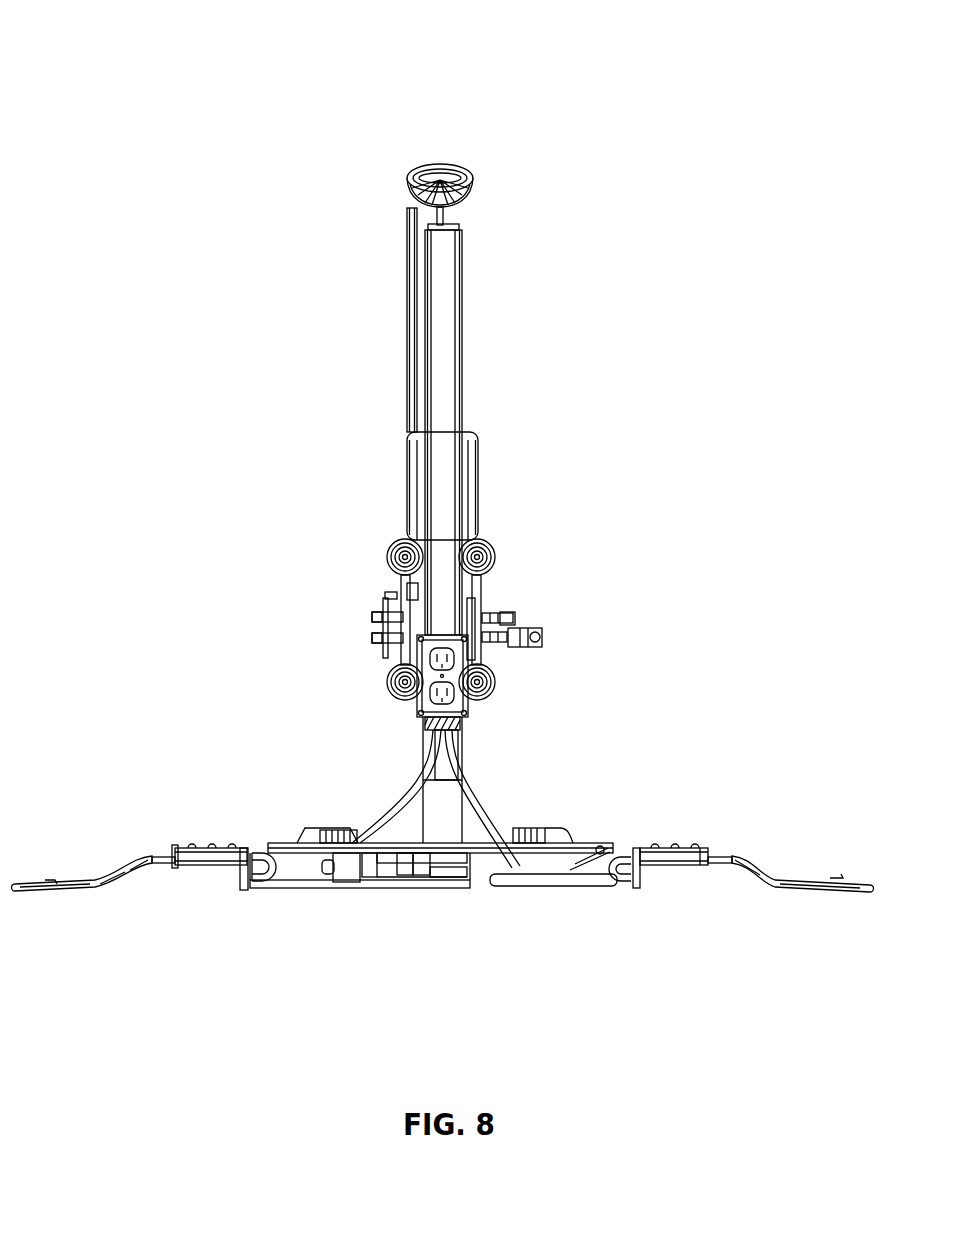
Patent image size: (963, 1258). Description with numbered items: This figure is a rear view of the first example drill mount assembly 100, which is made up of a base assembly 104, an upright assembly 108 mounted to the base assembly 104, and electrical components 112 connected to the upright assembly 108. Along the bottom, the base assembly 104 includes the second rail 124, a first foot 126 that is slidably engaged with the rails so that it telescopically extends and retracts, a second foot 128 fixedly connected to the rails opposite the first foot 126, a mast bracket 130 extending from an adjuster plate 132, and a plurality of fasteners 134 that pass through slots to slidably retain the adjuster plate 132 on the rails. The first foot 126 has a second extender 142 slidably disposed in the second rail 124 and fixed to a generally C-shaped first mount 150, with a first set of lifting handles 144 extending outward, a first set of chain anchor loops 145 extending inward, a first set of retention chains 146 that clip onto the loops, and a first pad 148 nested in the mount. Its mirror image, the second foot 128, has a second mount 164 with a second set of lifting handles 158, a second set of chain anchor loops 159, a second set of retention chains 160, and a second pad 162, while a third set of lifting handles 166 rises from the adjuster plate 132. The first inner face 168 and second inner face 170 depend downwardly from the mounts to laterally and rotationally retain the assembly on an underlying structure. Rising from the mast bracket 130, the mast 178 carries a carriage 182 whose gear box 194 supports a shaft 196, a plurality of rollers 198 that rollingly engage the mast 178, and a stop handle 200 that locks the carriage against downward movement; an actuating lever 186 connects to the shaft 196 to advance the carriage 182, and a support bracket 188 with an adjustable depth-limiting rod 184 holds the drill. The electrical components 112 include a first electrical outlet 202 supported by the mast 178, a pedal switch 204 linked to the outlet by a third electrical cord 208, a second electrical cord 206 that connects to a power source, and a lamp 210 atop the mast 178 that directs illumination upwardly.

The drill mount assembly 100 is at (115, 52).
The base assembly 104 is at (130, 1003).
The upright assembly 108 is at (333, 283).
The electrical components 112 is at (575, 710).
The second rail 124 is at (282, 888).
The first foot 126 is at (652, 848).
The second foot 128 is at (180, 848).
The mast bracket 130 is at (422, 880).
The adjuster plate 132 is at (290, 872).
The plurality of fasteners 134 is at (520, 830).
The second extender 142 is at (628, 888).
The first set of lifting handles 144 is at (727, 855).
The first set of chain anchor loops 145 is at (590, 845).
The first set of retention chains 146 is at (827, 878).
The first pad 148 is at (700, 868).
The first mount 150 is at (700, 848).
The second set of lifting handles 158 is at (160, 855).
The second set of chain anchor loops 159 is at (258, 848).
The second set of retention chains 160 is at (92, 890).
The second pad 162 is at (198, 880).
The second mount 164 is at (212, 848).
The third set of lifting handles 166 is at (333, 830).
The first inner face 168 is at (640, 888).
The second inner face 170 is at (240, 880).
The mast 178 is at (441, 267).
The carriage 182 is at (550, 600).
The depth-limiting rod 184 is at (412, 295).
The actuating lever 186 is at (540, 638).
The support bracket 188 is at (478, 462).
The gear box 194 is at (478, 582).
The shaft 196 is at (500, 650).
The plurality of rollers 198 is at (485, 552).
The stop handle 200 is at (388, 598).
The first electrical outlet 202 is at (415, 708).
The pedal switch 204 is at (372, 885).
The second electrical cord 206 is at (487, 790).
The third electrical cord 208 is at (423, 775).
The lamp 210 is at (410, 175).